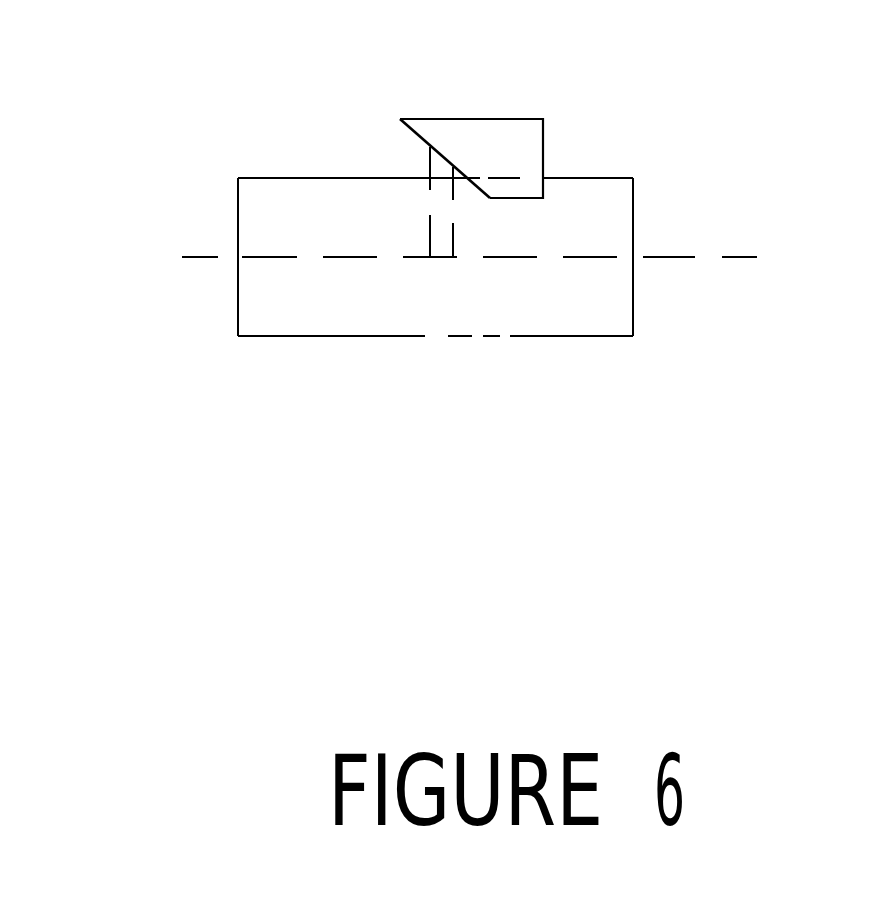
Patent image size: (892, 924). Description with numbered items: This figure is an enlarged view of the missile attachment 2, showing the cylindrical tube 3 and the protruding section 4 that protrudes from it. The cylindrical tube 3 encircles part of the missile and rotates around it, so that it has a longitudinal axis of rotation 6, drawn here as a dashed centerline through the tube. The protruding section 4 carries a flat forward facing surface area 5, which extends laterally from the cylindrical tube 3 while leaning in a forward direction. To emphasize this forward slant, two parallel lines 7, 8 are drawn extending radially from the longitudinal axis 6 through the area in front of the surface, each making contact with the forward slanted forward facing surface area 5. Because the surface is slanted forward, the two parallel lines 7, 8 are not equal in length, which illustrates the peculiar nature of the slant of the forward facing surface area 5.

The missile attachment 2 is at (303, 295).
The cylindrical tube 3 is at (540, 320).
The protruding section 4 is at (502, 153).
The forward facing surface area 5 is at (407, 131).
The longitudinal axis of rotation 6 is at (565, 263).
The parallel line 7 is at (420, 155).
The parallel line 8 is at (463, 230).